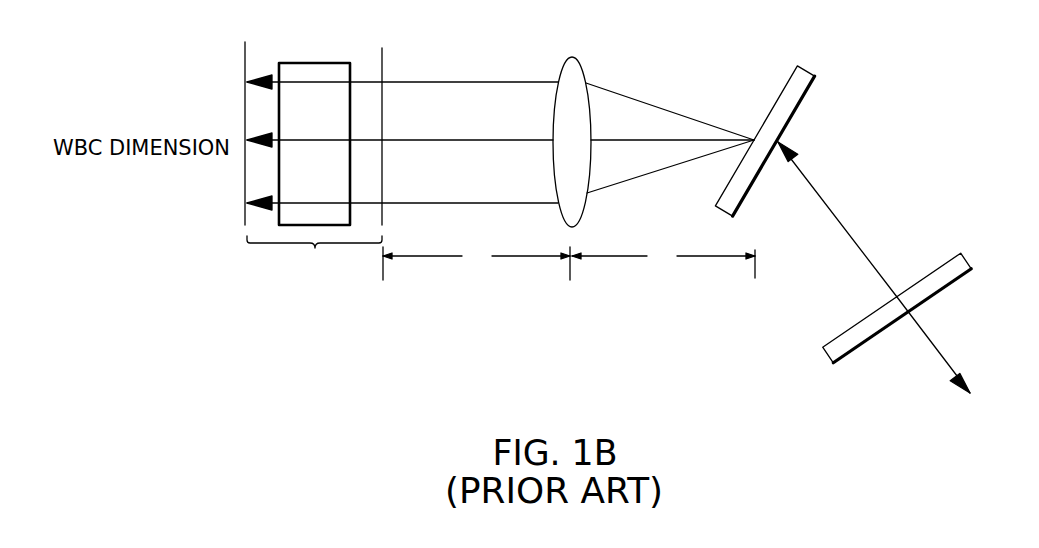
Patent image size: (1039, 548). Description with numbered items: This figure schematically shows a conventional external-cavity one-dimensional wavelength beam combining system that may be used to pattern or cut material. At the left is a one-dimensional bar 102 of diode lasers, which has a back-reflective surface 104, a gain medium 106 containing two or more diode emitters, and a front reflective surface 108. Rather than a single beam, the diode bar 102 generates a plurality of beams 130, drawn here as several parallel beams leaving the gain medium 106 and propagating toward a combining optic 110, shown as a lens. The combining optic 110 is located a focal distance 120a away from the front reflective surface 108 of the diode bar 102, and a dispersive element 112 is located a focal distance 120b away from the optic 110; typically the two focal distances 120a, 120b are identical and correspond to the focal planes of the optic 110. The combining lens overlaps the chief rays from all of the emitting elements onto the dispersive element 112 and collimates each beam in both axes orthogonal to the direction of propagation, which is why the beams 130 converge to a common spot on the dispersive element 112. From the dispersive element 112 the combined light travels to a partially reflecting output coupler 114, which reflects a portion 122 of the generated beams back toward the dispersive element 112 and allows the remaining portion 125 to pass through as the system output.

The 1D bar 102 is at (315, 249).
The back-reflective surface 104 is at (246, 121).
The gain medium 106 is at (313, 62).
The front reflective surface 108 is at (381, 121).
The combining optic 110 is at (572, 57).
The dispersive element 112 is at (813, 72).
The partially reflecting output coupler 114 is at (968, 259).
The focal distance 120a is at (469, 271).
The focal distance 120b is at (677, 271).
The reflected portion 122 is at (845, 228).
The remaining portion 125 is at (921, 333).
The plurality of beams 130 is at (313, 84).